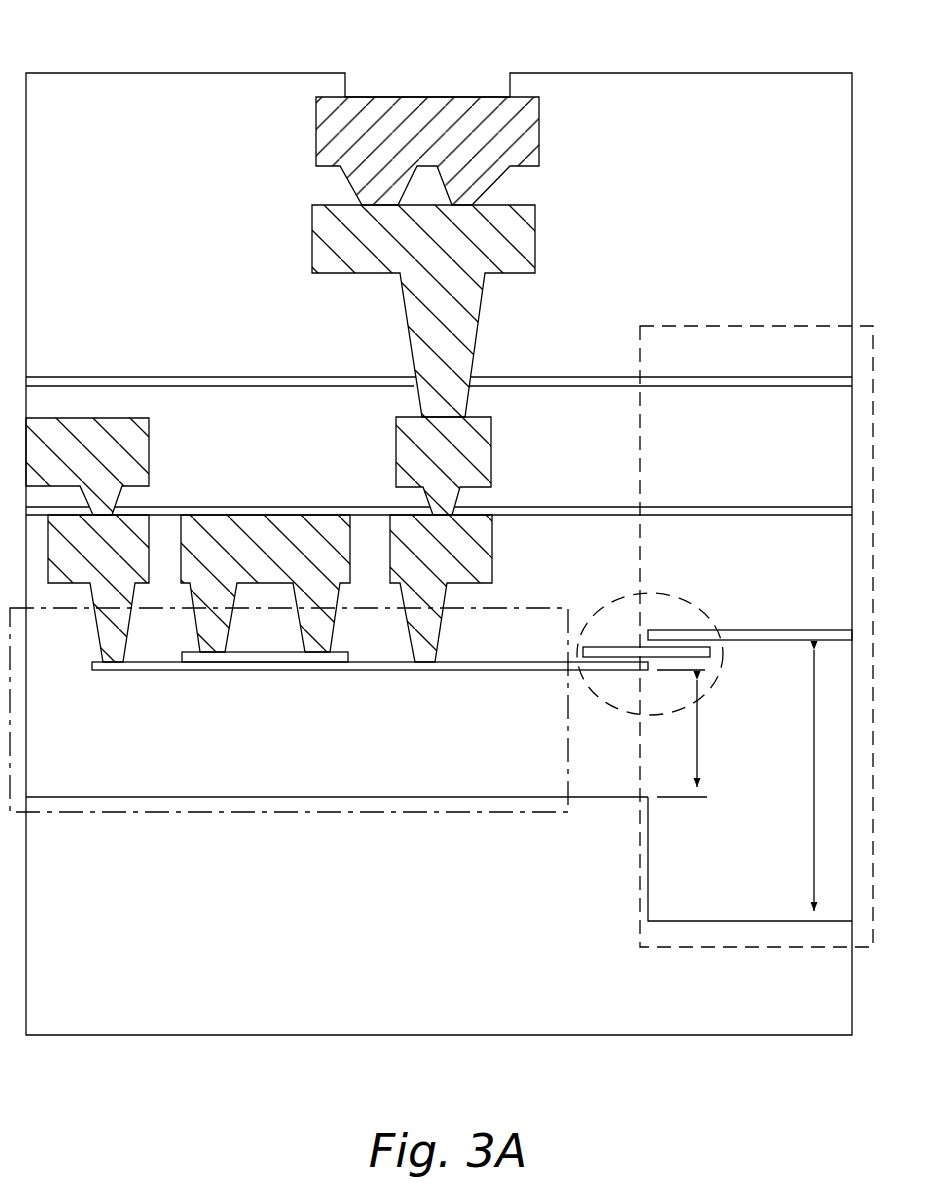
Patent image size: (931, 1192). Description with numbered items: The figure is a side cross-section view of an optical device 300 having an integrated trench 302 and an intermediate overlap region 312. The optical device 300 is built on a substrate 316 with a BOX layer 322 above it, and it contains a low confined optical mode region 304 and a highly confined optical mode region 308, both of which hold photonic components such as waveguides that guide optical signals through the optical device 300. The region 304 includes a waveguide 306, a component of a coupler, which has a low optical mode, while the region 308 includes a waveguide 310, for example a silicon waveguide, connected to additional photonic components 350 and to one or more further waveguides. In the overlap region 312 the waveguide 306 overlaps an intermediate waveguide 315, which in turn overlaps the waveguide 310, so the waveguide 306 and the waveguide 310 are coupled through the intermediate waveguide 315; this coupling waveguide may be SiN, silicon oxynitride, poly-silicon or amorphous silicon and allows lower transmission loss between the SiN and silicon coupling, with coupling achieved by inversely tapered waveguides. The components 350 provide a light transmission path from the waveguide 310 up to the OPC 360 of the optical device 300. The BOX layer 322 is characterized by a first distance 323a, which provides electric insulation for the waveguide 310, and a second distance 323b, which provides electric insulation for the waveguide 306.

The optical device 300 is at (120, 40).
The integrated trench 302 is at (729, 859).
The low confined optical mode region 304 is at (755, 326).
The waveguide 306 is at (753, 630).
The highly confined optical mode region 308 is at (548, 607).
The waveguide 310 is at (170, 672).
The overlap region 312 is at (613, 598).
The intermediate waveguide 315 is at (610, 647).
The substrate 316 is at (245, 952).
The BOX layer 322 is at (245, 765).
The first distance 323a is at (698, 720).
The second distance 323b is at (814, 763).
The components 350 is at (407, 460).
The OPC 360 is at (405, 140).